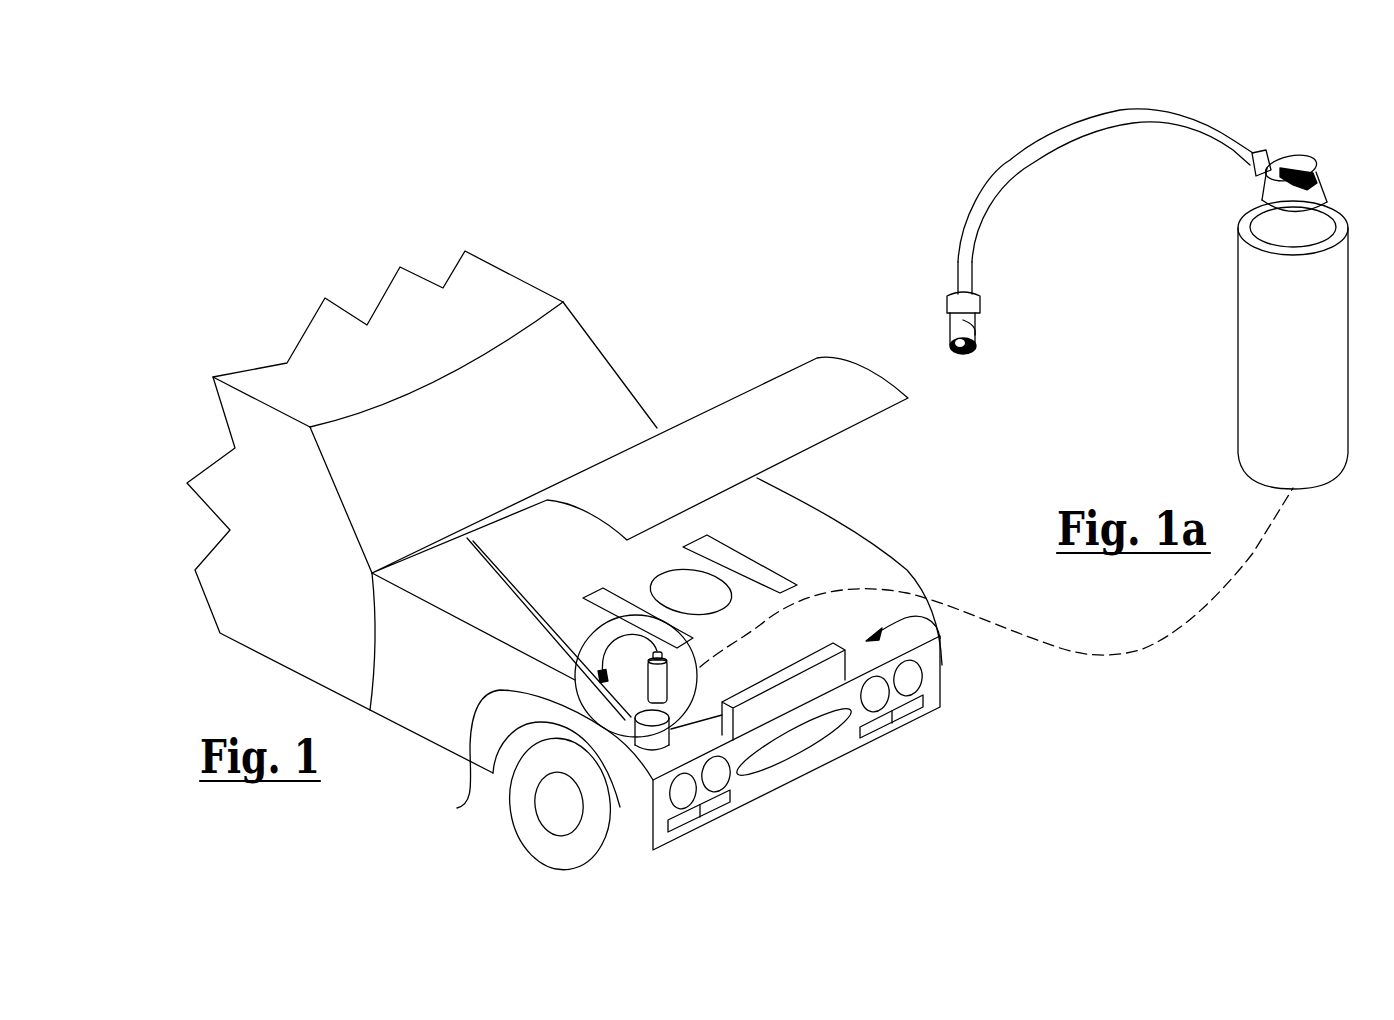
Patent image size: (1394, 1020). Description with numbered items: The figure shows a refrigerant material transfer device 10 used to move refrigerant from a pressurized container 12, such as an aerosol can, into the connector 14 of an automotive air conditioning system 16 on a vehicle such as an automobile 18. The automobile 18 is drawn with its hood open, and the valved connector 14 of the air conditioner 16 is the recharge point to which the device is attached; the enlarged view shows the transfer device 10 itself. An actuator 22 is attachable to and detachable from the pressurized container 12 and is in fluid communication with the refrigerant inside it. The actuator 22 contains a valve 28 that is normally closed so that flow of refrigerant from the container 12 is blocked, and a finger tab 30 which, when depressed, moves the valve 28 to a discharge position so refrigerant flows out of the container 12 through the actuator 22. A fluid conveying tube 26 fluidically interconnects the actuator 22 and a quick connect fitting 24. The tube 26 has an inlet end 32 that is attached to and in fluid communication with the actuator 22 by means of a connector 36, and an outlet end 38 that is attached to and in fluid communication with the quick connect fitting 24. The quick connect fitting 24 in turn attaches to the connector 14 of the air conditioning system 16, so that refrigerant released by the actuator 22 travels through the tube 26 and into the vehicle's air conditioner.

In FIG. 1, the refrigerant material transfer device 10 is at (729, 744).
In FIG. 1A, the refrigerant material transfer device 10 is at (1019, 434).
In FIG. 1, the pressurized container 12 is at (657, 677).
In FIG. 1A, the pressurized container 12 is at (1313, 460).
In FIG. 1, the connector 14 is at (604, 677).
In FIG. 1, the automotive air conditioning system 16 is at (942, 665).
In FIG. 1, the automobile 18 is at (868, 745).
In FIG. 1A, the actuator 22 is at (1300, 153).
In FIG. 1A, the quick connect fitting 24 is at (947, 312).
In FIG. 1A, the fluid conveying tube 26 is at (1053, 130).
In FIG. 1A, the valve 28 is at (1243, 211).
In FIG. 1A, the finger tab 30 is at (1280, 170).
In FIG. 1A, the inlet end 32 is at (1250, 154).
In FIG. 1A, the connector 36 is at (1258, 180).
In FIG. 1A, the outlet end 38 is at (957, 253).